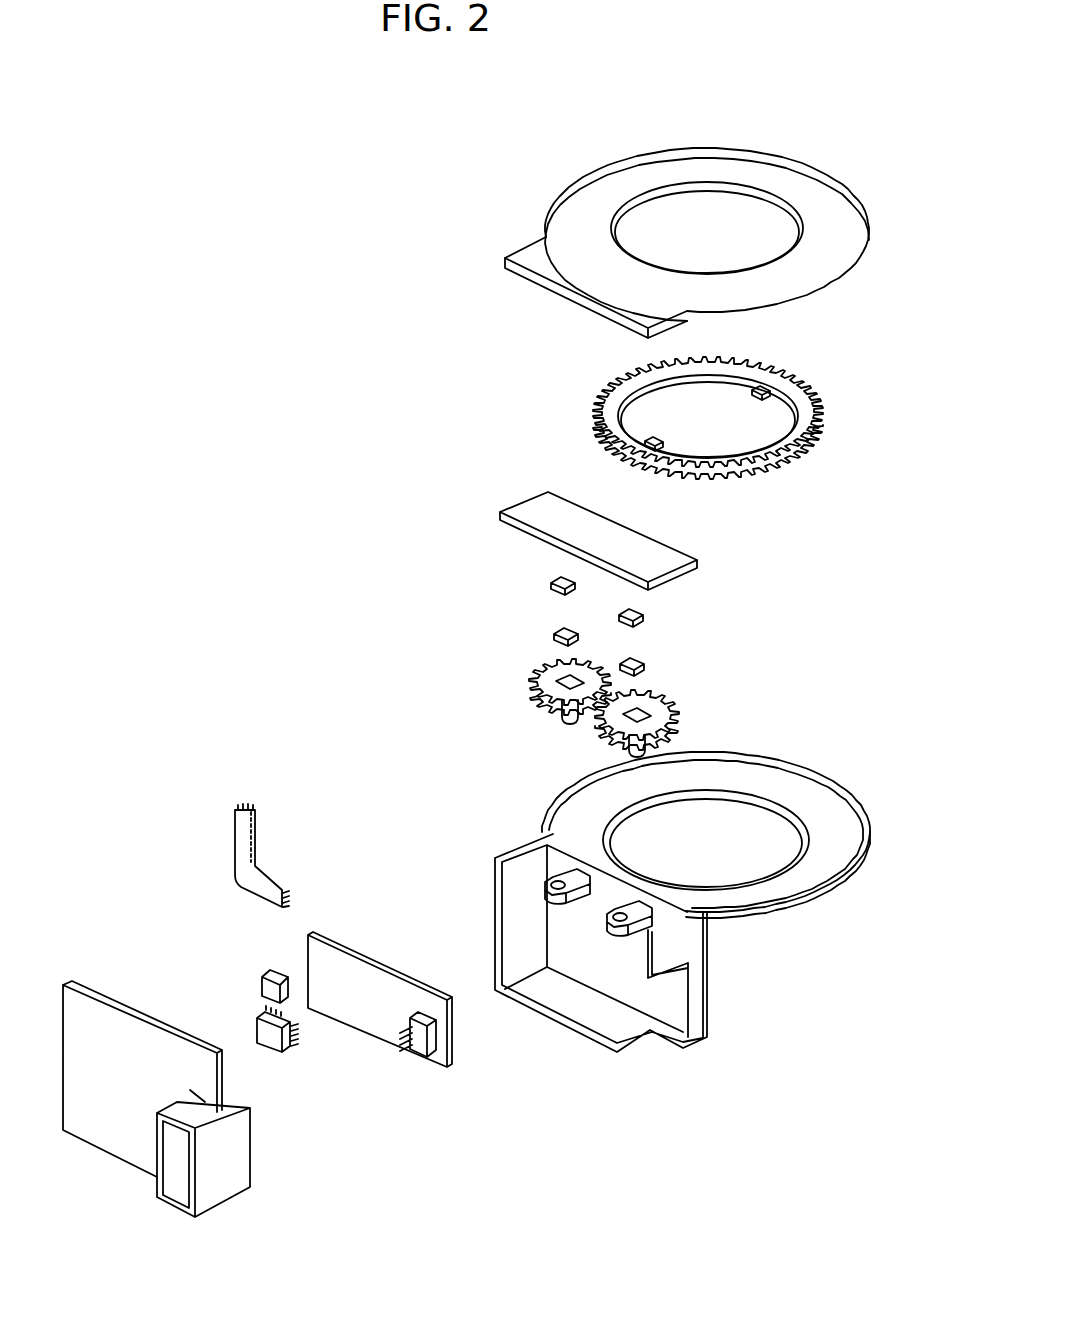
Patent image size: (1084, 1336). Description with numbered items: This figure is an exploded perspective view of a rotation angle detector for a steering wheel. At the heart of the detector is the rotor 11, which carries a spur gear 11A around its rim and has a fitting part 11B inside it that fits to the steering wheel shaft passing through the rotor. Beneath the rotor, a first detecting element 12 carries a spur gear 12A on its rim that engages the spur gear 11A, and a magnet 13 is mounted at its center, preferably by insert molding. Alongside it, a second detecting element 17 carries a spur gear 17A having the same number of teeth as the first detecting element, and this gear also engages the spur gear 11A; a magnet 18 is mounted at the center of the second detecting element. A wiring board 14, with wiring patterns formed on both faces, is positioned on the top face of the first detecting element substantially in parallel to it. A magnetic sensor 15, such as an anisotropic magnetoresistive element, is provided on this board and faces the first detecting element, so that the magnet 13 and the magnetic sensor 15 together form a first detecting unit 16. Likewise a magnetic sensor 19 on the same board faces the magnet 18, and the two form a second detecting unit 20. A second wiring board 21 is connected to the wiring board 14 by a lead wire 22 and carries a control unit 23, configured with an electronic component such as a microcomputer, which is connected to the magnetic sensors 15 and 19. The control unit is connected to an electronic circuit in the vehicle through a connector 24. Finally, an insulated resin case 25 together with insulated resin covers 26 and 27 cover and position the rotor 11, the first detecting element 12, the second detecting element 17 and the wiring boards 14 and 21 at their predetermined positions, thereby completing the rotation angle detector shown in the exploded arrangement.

The cover 26 is at (578, 205).
The rotor 11 is at (685, 408).
The spur gear 11A is at (600, 398).
The fitting part 11B is at (775, 397).
The wiring board 14 is at (650, 555).
The first detecting unit 16 is at (400, 512).
The magnetic sensor 15 is at (551, 579).
The magnet 13 is at (553, 631).
The second detecting unit 20 is at (795, 550).
The magnetic sensor 19 is at (645, 613).
The magnet 18 is at (643, 663).
The first detecting element 12 is at (540, 675).
The spur gear 12A is at (530, 700).
The second detecting element 17 is at (660, 705).
The spur gear 17A is at (680, 718).
The case 25 is at (763, 892).
The lead wire 22 is at (243, 843).
The control unit 23 is at (263, 1030).
The cover 27 is at (230, 1107).
The connector 24 is at (450, 1067).
The wiring board 21 is at (437, 1008).